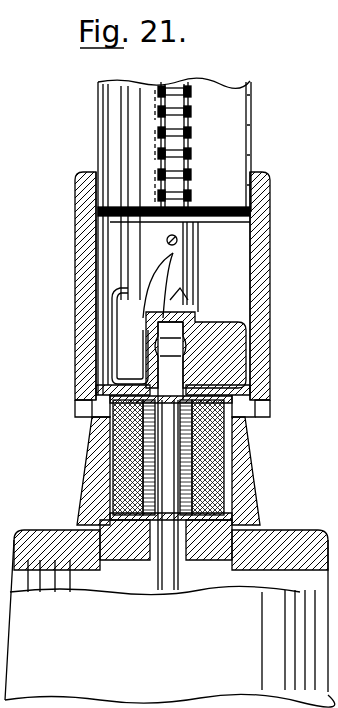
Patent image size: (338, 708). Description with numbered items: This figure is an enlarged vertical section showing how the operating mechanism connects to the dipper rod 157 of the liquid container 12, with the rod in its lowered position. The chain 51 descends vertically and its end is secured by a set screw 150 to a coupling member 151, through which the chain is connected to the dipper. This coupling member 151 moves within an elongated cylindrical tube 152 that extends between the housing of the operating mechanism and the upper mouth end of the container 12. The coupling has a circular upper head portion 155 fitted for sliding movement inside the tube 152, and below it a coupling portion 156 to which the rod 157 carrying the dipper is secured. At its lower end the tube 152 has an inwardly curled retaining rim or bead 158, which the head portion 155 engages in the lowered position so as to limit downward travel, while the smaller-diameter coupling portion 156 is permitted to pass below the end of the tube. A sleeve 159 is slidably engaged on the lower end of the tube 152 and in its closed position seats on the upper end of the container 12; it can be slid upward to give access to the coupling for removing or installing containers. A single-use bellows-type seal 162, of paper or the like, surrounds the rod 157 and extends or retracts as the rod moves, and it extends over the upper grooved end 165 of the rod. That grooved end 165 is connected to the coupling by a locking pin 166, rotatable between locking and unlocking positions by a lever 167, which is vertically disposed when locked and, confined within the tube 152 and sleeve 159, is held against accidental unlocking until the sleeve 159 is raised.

The liquid container 12 is at (50, 546).
The chain 51 is at (190, 116).
The set screw 150 is at (178, 240).
The coupling member 151 is at (199, 262).
The cylindrical tube 152 is at (252, 124).
The upper head portion 155 is at (206, 214).
The coupling portion 156 is at (228, 338).
The dipper rod 157 is at (165, 580).
The retaining rim or bead 158 is at (253, 222).
The sleeve 159 is at (262, 292).
The bellows-type seal 162 is at (215, 465).
The upper grooved end 165 is at (148, 358).
The locking pin 166 is at (205, 362).
The lever 167 is at (160, 284).